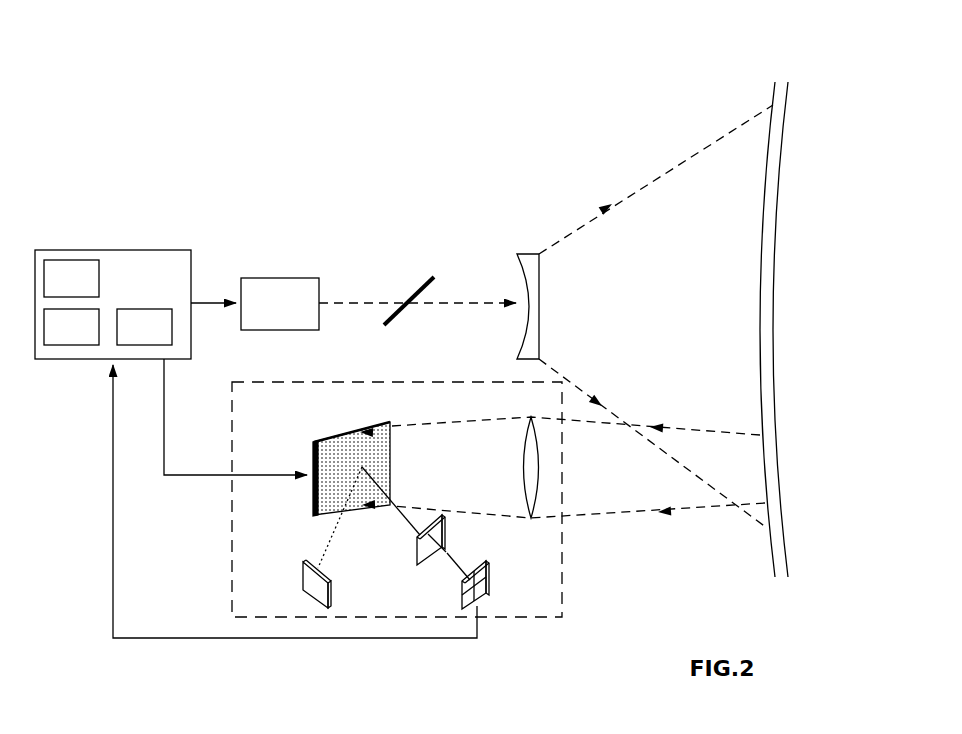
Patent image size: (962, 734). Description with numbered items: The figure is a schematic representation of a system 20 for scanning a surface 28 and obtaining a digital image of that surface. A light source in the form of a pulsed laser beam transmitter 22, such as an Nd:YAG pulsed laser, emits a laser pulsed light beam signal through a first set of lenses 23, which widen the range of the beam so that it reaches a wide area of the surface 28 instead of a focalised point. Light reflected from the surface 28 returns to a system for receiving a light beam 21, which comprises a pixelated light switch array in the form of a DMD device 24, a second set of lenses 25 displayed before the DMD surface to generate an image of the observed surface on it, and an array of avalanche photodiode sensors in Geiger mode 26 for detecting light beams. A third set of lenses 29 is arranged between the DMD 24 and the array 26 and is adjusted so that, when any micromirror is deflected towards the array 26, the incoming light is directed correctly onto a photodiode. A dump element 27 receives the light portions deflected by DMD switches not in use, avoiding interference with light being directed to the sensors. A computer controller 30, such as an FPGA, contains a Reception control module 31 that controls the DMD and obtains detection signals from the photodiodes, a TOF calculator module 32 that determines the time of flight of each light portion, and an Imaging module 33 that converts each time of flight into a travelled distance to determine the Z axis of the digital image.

The system for scanning a surface 20 is at (419, 130).
The system for receiving a light beam 21 is at (357, 624).
The pulsed laser beam transmitter 22 is at (280, 304).
The first set of lenses 23 is at (528, 228).
The DMD device 24 is at (311, 438).
The second set of lenses 25 is at (548, 512).
The array of avalanche photodiode sensors in Geiger mode 26 is at (491, 601).
The dump element 27 is at (294, 574).
The surface 28 is at (804, 115).
The third set of lenses 29 is at (410, 548).
The computer controller 30 is at (113, 264).
The Reception control module 31 is at (71, 278).
The TOF calculator module 32 is at (71, 327).
The Imaging module 33 is at (144, 327).